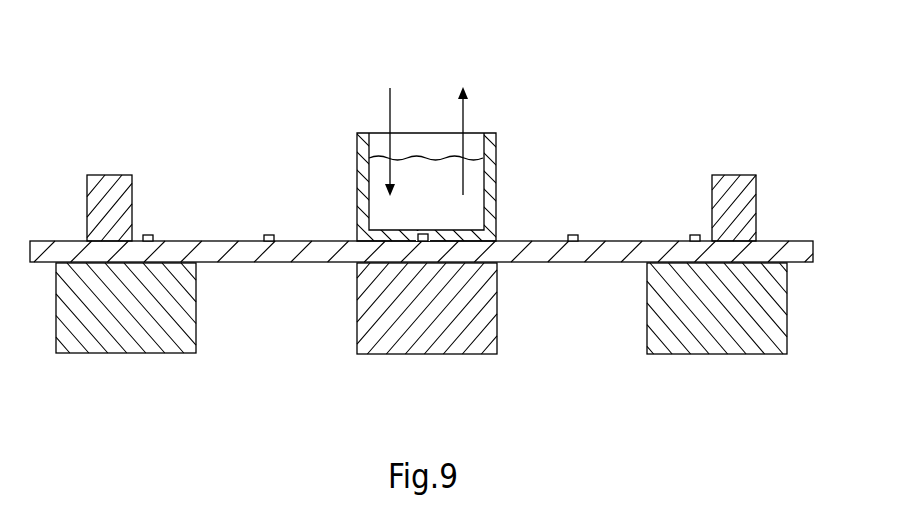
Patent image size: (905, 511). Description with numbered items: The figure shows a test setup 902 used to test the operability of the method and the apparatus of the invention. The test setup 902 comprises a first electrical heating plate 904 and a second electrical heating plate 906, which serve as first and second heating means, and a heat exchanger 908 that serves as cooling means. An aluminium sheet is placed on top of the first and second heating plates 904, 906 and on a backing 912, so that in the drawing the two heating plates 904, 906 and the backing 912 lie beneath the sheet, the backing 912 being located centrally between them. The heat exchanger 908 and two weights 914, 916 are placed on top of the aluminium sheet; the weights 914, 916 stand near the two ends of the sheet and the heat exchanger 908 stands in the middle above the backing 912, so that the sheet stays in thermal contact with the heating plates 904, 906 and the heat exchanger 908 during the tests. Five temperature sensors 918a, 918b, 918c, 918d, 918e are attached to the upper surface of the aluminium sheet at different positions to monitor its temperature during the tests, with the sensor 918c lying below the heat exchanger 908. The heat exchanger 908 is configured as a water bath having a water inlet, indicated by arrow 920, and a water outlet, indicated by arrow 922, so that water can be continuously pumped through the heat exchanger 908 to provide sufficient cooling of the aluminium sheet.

The test setup 902 is at (642, 90).
The first electrical heating plate 904 is at (83, 343).
The second electrical heating plate 906 is at (753, 343).
The heat exchanger 908 is at (492, 152).
The backing 912 is at (455, 343).
The weight 914 is at (100, 176).
The weight 916 is at (736, 180).
The temperature sensor 918a is at (148, 235).
The temperature sensor 918b is at (268, 235).
The temperature sensor 918c is at (426, 234).
The temperature sensor 918d is at (576, 235).
The temperature sensor 918e is at (694, 235).
The water inlet 920 is at (388, 112).
The water outlet 922 is at (466, 116).